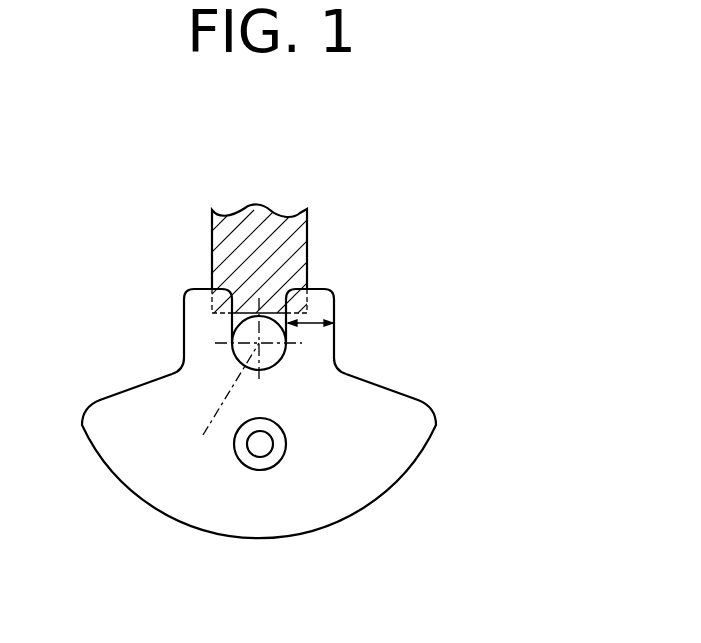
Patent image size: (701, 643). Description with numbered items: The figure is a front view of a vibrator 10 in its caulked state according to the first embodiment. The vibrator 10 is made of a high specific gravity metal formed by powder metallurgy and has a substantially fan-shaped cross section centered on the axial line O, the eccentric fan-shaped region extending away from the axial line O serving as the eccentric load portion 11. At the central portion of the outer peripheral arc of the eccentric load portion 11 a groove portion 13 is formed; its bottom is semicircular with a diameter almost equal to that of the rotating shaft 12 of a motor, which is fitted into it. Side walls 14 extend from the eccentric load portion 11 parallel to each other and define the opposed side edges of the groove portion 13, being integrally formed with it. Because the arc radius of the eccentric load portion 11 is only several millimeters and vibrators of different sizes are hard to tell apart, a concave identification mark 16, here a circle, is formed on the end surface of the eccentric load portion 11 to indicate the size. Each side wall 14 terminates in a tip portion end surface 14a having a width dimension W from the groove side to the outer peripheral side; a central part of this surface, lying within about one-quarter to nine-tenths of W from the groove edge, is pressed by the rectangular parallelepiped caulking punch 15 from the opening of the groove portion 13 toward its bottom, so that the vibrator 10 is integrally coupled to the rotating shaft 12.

The vibrator 10 is at (264, 419).
The eccentric load portion 11 is at (355, 493).
The rotating shaft 12 is at (273, 365).
The groove portion 13 is at (240, 352).
The side wall 14 is at (192, 343).
The tip portion end surface 14a is at (192, 289).
The caulking punch 15 is at (306, 222).
The identification mark 16 is at (265, 468).
The axial line O is at (241, 381).
The width dimension W is at (334, 307).